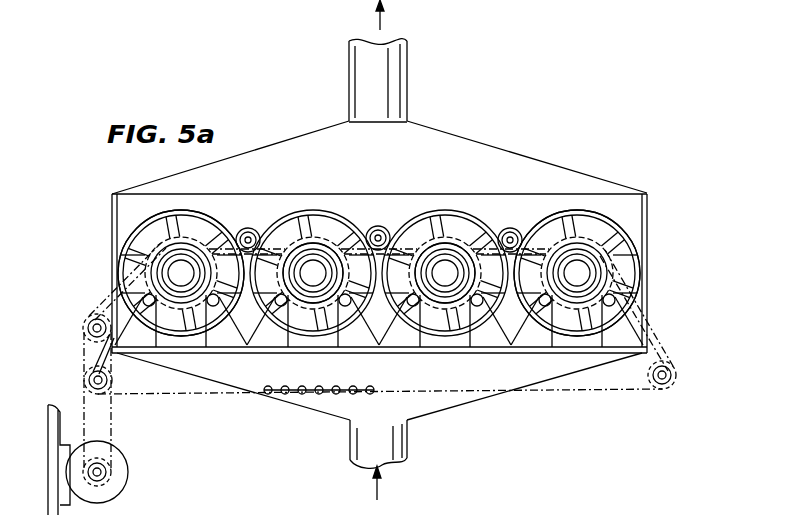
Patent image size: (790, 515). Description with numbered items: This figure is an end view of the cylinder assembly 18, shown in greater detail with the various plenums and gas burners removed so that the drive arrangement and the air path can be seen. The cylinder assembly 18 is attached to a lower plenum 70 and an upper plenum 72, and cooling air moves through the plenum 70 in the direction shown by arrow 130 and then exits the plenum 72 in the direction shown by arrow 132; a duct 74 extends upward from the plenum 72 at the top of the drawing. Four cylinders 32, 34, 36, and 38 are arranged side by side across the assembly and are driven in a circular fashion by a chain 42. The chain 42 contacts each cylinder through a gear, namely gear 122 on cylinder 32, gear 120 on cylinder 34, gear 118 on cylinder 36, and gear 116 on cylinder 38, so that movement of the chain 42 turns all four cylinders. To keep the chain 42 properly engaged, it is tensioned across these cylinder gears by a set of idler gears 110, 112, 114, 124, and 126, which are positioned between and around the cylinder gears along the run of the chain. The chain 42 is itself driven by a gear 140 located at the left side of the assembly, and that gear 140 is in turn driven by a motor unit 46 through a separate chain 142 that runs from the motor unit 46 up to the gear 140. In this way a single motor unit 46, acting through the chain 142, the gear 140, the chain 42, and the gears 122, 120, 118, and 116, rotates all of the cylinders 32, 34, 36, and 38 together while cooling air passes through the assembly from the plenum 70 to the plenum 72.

The cylinder assembly 18 is at (643, 196).
The cylinder 32 is at (137, 252).
The cylinder 34 is at (292, 202).
The cylinder 36 is at (412, 224).
The cylinder 38 is at (612, 218).
The chain 42 is at (660, 341).
The motor unit 46 is at (118, 478).
The plenum 70 is at (412, 380).
The plenum 72 is at (392, 161).
The outlet duct 74 is at (398, 80).
The idler gear 110 is at (655, 384).
The idler gear 112 is at (86, 375).
The idler gear 114 is at (520, 229).
The gear 116 is at (608, 214).
The gear 118 is at (450, 216).
The gear 120 is at (328, 203).
The gear 122 is at (130, 238).
The idler gear 124 is at (386, 215).
The idler gear 126 is at (256, 216).
The arrow 130 is at (378, 495).
The arrow 132 is at (380, 24).
The gear 140 is at (84, 320).
The chain 142 is at (112, 433).